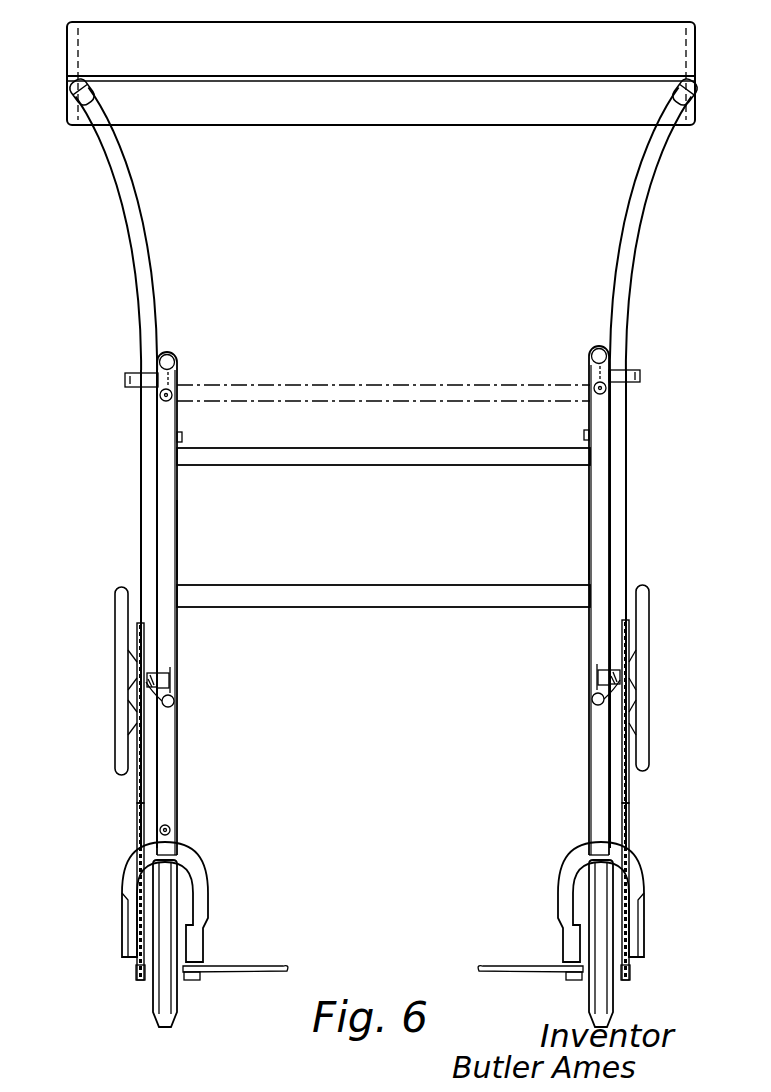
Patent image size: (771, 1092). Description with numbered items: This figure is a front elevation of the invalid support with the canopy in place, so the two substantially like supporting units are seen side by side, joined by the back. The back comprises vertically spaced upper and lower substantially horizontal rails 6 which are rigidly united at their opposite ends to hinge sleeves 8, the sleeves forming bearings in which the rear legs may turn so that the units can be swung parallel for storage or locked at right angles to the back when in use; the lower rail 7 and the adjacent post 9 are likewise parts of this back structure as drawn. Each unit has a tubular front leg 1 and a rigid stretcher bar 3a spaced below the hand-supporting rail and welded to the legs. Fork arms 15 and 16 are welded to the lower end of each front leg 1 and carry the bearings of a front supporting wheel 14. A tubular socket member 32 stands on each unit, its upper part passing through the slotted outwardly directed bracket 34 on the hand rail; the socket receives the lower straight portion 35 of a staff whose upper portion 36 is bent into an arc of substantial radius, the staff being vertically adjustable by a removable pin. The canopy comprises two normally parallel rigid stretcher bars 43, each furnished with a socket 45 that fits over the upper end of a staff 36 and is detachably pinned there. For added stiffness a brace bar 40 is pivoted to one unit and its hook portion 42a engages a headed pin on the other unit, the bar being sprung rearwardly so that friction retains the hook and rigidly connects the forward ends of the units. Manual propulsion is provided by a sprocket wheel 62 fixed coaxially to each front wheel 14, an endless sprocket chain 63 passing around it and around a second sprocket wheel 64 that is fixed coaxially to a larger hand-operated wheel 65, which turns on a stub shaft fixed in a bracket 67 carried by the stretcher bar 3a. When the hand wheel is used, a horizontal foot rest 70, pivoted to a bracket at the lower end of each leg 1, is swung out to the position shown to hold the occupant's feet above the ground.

The stretcher bar 43 is at (70, 62).
The socket 45 is at (92, 94).
The upper portion of staff 36 is at (642, 204).
The tubular socket member 32 is at (630, 416).
The lower straight portion of staff 35 is at (626, 360).
The bracket 34 is at (645, 378).
The brace bar 40 is at (424, 388).
The bars or rails of the back 6 is at (337, 463).
The lower rail 7 is at (342, 598).
The left post 9 is at (178, 511).
The hinge sleeve 8 is at (586, 480).
The front leg 1 is at (170, 553).
The hand-operated wheel 65 is at (650, 755).
The sprocket wheel 64 is at (628, 630).
The endless sprocket chain 63 is at (630, 822).
The sprocket wheel 62 is at (636, 973).
The stretcher bar 3a is at (600, 702).
The bracket 67 is at (612, 720).
The hook portion 42a is at (172, 829).
The fork arm 16 is at (206, 882).
The fork arm 15 is at (124, 892).
The supporting wheel 14 is at (178, 1018).
The foot rest 70 is at (242, 967).